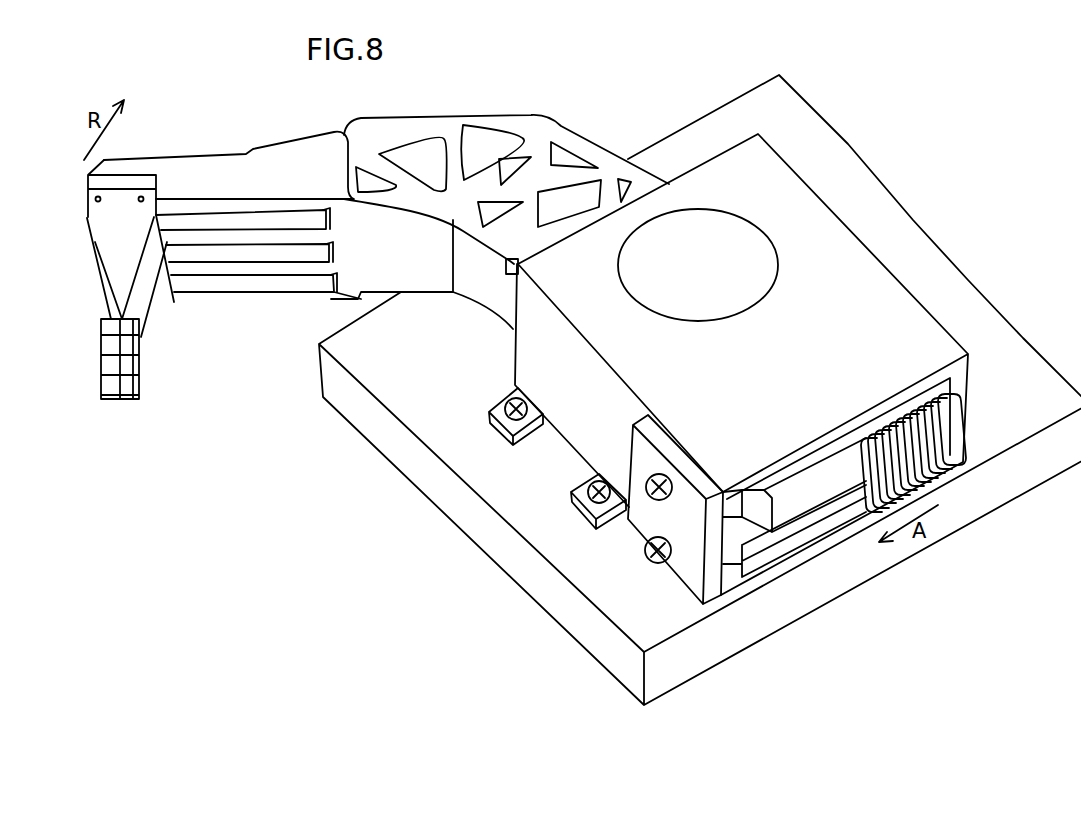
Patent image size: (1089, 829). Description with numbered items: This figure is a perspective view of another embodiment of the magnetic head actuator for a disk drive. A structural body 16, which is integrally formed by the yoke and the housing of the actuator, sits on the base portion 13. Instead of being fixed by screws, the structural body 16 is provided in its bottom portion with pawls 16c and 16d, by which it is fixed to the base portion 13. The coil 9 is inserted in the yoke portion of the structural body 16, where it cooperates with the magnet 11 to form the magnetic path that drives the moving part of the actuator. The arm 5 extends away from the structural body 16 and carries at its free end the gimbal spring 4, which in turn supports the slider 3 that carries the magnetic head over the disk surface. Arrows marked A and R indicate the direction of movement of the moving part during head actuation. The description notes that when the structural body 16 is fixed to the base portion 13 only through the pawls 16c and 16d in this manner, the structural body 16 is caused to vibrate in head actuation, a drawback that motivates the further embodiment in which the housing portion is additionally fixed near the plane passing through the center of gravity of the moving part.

The slider 3 is at (137, 397).
The gimbal spring 4 is at (95, 208).
The arm 5 is at (262, 160).
The coil 9 is at (946, 394).
The magnet 11 is at (741, 554).
The base portion 13 is at (1017, 480).
The structural body 16 is at (927, 298).
The pawl 16c is at (497, 421).
The pawl 16d is at (582, 505).